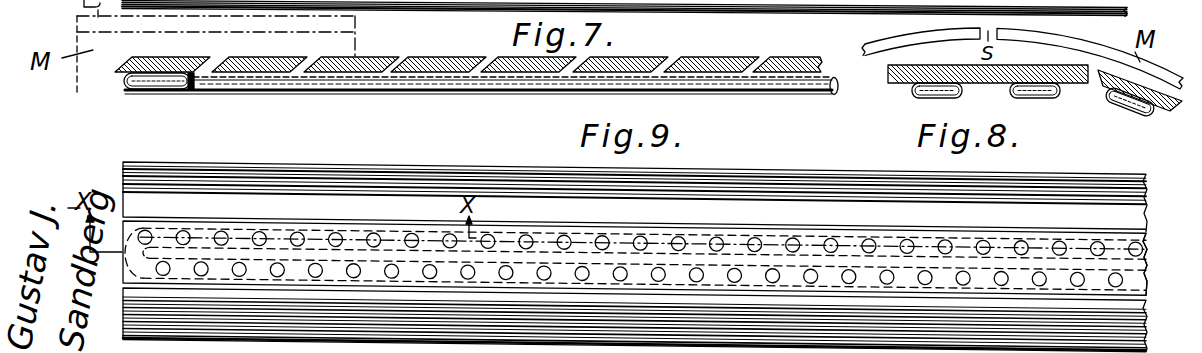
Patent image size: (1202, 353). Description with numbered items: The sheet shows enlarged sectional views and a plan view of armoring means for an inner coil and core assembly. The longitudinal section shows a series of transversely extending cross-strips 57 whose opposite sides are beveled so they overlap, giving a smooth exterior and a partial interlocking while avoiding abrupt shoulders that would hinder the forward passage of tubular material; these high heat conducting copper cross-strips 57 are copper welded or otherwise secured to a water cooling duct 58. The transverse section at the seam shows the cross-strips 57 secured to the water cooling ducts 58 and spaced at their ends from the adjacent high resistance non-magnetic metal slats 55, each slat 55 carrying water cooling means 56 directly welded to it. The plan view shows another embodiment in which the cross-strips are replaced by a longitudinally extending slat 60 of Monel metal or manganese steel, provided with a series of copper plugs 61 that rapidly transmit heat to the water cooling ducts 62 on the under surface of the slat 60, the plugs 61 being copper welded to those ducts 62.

In FIG. 8, the metal slats 55 is at (1151, 88).
In FIG. 9, the metal slats 55 is at (757, 190).
In FIG. 8, the water cooling means 56 is at (1135, 112).
In FIG. 7, the cross-strips 57 is at (414, 57).
In FIG. 8, the cross-strips 57 is at (992, 83).
In FIG. 7, the water cooling duct 58 is at (227, 80).
In FIG. 8, the water cooling duct 58 is at (925, 97).
In FIG. 9, the longitudinally extending slat 60 is at (663, 232).
In FIG. 9, the plugs 61 is at (755, 238).
In FIG. 9, the water cooling ducts 62 is at (1155, 262).